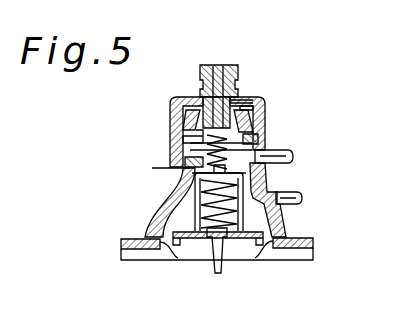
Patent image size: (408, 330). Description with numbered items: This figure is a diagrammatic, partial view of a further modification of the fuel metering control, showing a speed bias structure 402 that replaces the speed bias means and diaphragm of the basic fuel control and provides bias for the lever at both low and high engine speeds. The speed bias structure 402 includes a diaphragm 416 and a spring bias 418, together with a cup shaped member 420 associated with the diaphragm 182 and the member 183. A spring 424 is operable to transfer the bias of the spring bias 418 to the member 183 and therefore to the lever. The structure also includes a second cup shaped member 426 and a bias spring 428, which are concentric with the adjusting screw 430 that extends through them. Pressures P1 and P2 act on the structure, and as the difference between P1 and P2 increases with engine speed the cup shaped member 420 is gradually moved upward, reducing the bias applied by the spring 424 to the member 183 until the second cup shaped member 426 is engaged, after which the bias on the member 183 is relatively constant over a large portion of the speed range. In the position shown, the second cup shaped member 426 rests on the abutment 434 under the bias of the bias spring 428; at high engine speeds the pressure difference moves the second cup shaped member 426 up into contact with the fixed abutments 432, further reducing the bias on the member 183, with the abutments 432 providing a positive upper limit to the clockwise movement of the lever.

The speed bias structure 402 is at (300, 50).
The adjusting screw 430 is at (221, 66).
The bias spring 428 is at (237, 98).
The second cup shaped member 426 is at (252, 131).
The abutment 434 is at (258, 142).
The abutments 432 is at (188, 118).
The spring bias 418 is at (178, 146).
The diaphragm 416 is at (185, 165).
The cup shaped member 420 is at (195, 200).
The spring 424 is at (228, 218).
The pressure P1 is at (312, 198).
The pressure P2 is at (307, 158).
The diaphragm 182 is at (270, 250).
The member 183 is at (212, 266).